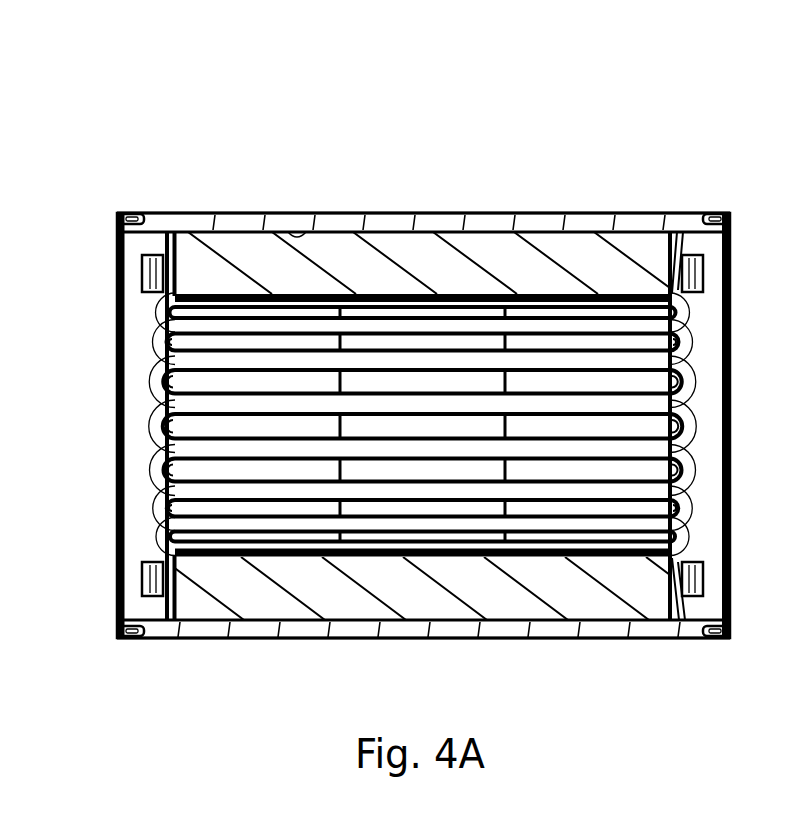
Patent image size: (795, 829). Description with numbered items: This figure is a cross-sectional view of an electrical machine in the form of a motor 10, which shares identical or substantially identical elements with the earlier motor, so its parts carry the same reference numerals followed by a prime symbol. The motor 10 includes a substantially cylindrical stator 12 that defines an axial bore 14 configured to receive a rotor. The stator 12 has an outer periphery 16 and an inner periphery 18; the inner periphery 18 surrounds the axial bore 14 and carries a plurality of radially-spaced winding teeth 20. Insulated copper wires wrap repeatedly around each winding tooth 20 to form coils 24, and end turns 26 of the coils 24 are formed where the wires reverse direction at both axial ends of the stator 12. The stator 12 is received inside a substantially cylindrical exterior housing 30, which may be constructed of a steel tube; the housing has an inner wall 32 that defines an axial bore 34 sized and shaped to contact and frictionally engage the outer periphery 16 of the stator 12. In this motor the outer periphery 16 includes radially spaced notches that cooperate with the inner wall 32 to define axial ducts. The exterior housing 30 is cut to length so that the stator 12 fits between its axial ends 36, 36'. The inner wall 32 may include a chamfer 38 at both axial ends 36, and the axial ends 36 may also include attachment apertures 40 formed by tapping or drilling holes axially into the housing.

The motor 10 is at (583, 165).
The stator 12 is at (262, 260).
The axial bore 14 is at (195, 450).
The outer periphery 16 is at (350, 237).
The inner periphery 18 is at (572, 300).
The winding teeth 20 is at (285, 525).
The coils 24 is at (660, 598).
The end turns 26 is at (147, 570).
The exterior housing 30 is at (443, 218).
The inner wall 32 is at (297, 235).
The axial bore 34 is at (140, 365).
The axial ends 36 is at (749, 397).
The axial ends 36' is at (81, 406).
The chamfer 38 is at (127, 640).
The attachment apertures 40 is at (124, 212).